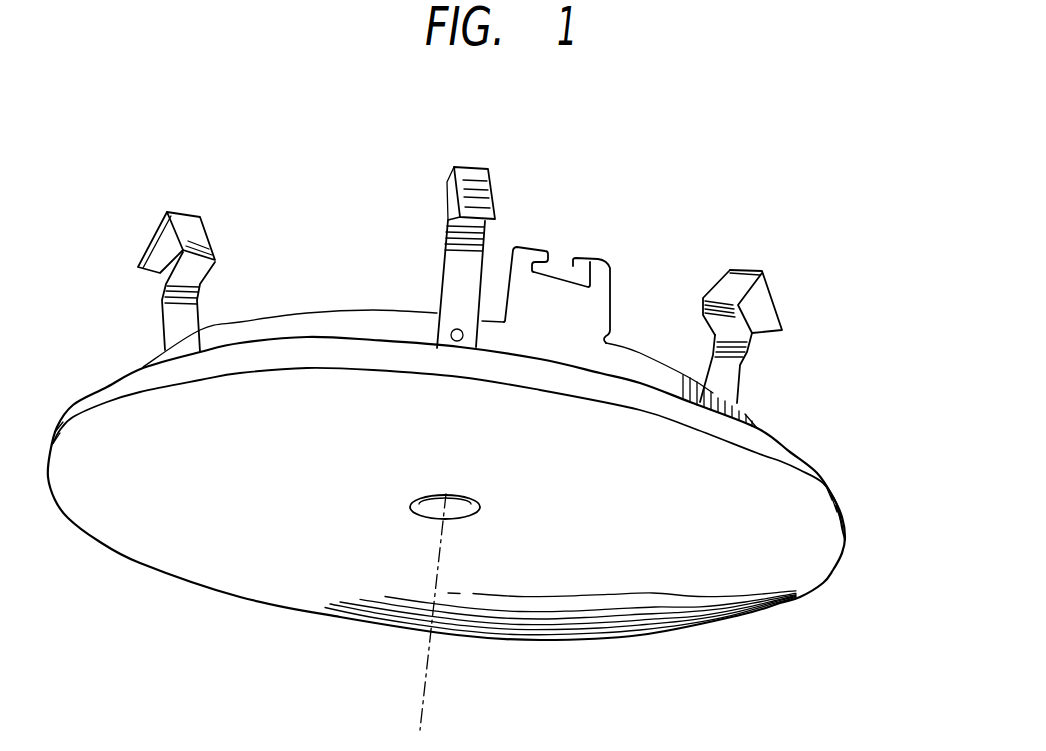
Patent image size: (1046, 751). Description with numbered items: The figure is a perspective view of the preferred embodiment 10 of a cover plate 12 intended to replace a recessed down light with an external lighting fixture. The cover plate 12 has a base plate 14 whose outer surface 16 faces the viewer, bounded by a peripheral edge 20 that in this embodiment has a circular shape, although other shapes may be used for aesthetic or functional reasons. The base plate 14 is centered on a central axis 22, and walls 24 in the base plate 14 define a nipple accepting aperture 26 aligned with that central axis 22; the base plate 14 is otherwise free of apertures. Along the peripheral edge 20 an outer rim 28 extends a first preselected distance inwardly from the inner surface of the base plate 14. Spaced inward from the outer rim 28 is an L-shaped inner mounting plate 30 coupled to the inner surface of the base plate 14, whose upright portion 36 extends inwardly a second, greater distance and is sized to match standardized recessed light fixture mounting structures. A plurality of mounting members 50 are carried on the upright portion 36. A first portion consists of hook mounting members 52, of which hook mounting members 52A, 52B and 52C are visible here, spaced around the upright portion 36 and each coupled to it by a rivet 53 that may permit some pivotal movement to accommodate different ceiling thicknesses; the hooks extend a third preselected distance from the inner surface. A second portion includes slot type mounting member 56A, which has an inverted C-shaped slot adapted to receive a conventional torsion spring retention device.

The preferred embodiment 10 is at (747, 133).
The cover plate 12 is at (777, 440).
The base plate 14 is at (803, 550).
The outer surface 16 is at (625, 519).
The peripheral edge 20 is at (847, 508).
The central axis 22 is at (440, 680).
The walls 24 is at (417, 513).
The nipple accepting aperture 26 is at (463, 513).
The outer rim 28 is at (818, 470).
The inner mounting plate 30 is at (347, 341).
The upright portion 36 is at (243, 333).
The mounting members 50 is at (141, 197).
The hook mounting members 52 is at (203, 222).
The hook mounting member 52A is at (203, 242).
The hook mounting member 52B is at (470, 168).
The hook mounting member 52C is at (763, 268).
The rivet 53 is at (457, 343).
The slot type mounting member 56A is at (582, 314).